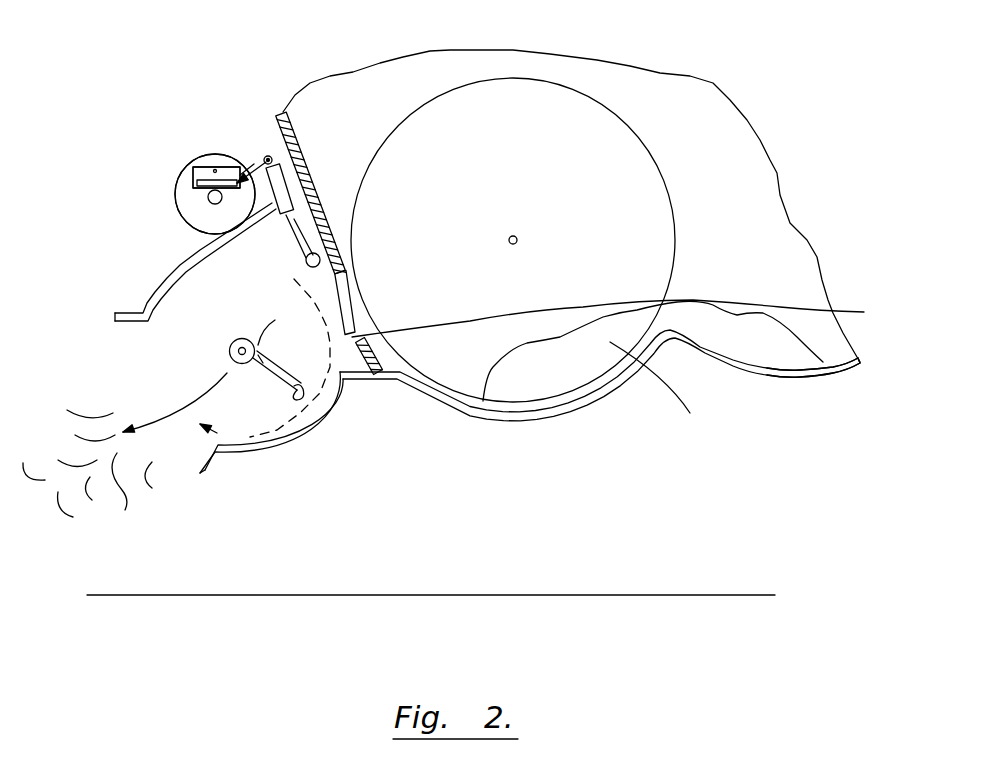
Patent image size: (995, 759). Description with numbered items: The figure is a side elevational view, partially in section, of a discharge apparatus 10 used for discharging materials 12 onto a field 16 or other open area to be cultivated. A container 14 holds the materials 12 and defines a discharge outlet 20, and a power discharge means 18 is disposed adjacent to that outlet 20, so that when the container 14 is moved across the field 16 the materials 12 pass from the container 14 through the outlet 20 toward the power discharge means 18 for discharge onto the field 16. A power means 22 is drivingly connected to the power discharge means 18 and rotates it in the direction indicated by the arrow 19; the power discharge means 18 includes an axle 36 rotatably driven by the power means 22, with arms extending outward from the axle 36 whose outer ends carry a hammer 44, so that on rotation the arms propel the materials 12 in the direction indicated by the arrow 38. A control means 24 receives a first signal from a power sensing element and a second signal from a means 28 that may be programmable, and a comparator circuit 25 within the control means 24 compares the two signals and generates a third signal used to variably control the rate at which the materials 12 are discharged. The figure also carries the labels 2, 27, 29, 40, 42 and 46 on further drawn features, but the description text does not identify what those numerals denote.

The exhaust cleaning system 2 is at (177, 202).
The discharge apparatus 10 is at (152, 197).
The materials 12 is at (367, 440).
The container 14 is at (757, 372).
The field 16 is at (545, 595).
The power discharge means 18 is at (133, 298).
The arrow 19 is at (277, 430).
The discharge outlet 20 is at (623, 318).
The power means 22 is at (213, 135).
The control means 24 is at (199, 175).
The comparator circuit 25 is at (548, 360).
The link rod 27 is at (275, 177).
The programmable means 28 is at (283, 160).
The spring 29 is at (357, 316).
The axle 36 is at (230, 351).
The arrow 38 is at (200, 393).
The vehicle body 40 is at (270, 322).
The bracket 42 is at (288, 312).
The hammer 44 is at (303, 397).
The wheel 46 is at (205, 218).